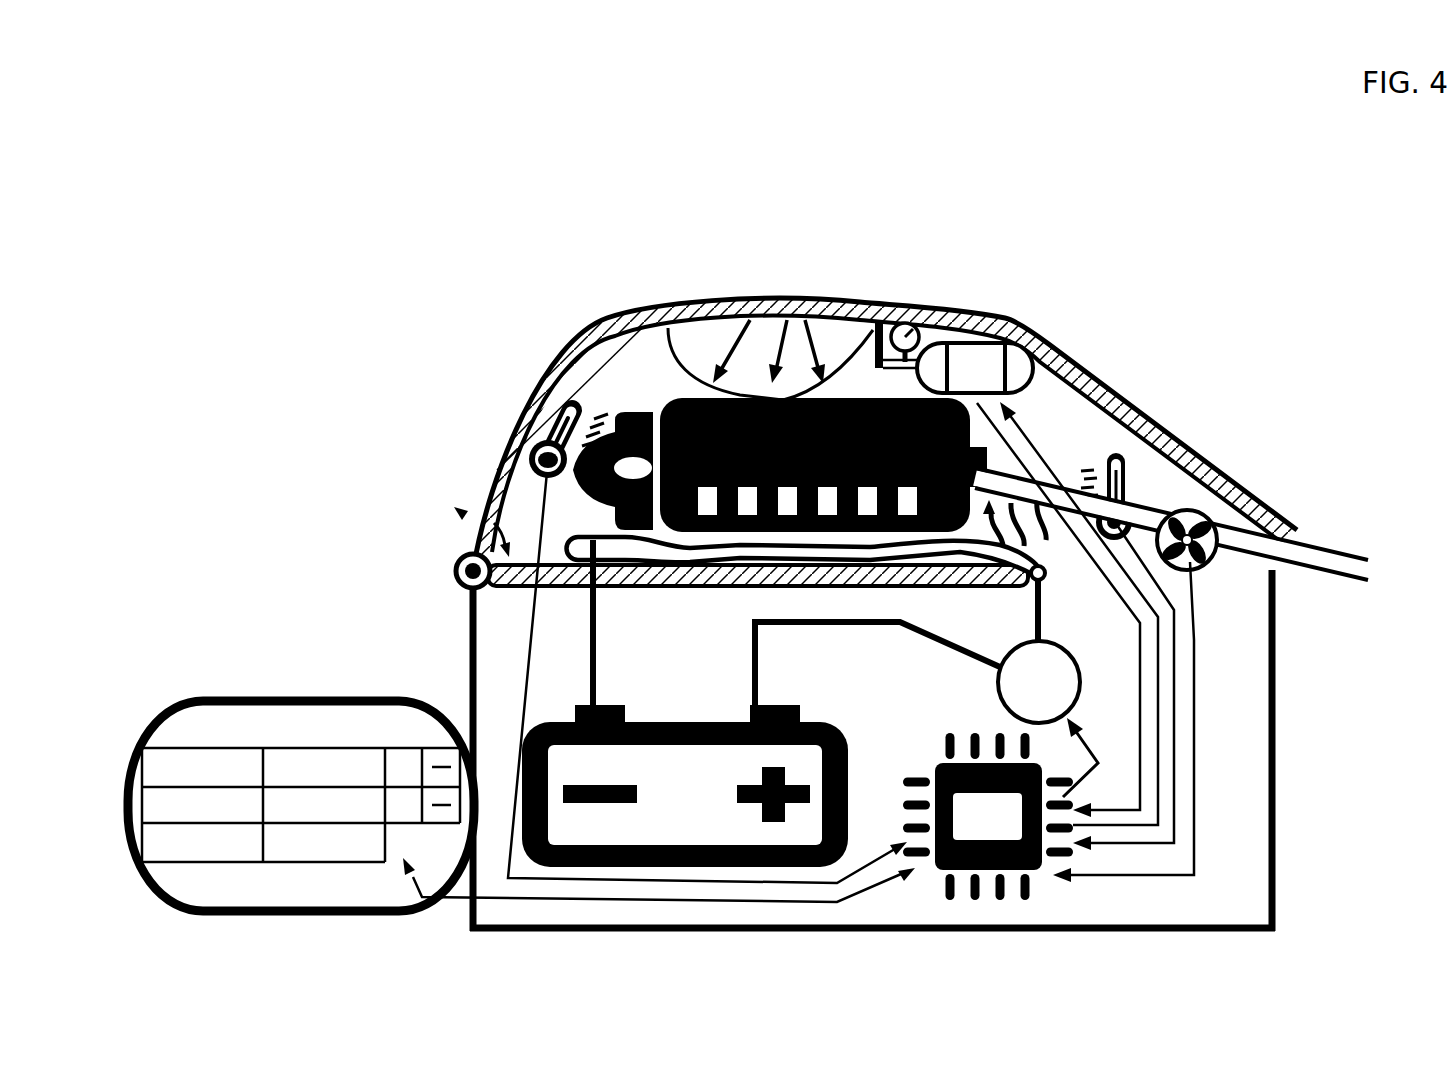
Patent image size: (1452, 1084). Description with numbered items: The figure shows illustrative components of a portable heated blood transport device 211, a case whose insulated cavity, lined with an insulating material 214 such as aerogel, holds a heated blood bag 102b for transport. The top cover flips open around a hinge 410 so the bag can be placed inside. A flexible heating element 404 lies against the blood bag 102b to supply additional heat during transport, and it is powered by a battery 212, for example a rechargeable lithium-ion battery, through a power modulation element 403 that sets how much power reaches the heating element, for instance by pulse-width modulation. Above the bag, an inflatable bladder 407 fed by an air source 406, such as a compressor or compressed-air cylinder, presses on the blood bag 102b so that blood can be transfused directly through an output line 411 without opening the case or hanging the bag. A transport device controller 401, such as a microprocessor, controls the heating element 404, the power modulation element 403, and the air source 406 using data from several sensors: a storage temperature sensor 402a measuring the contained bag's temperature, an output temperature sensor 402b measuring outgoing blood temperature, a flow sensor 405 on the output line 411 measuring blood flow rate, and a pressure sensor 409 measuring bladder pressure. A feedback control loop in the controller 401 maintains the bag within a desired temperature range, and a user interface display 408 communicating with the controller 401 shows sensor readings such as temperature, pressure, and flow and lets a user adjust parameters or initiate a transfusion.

The heated blood bag 102b is at (677, 403).
The insulating material 214 is at (577, 358).
The portable heated blood transport device 211 is at (500, 468).
The hinge 410 is at (462, 557).
The storage temperature sensor 402a is at (573, 400).
The output temperature sensor 402b is at (1118, 458).
The inflatable bladder 407 is at (835, 342).
The pressure sensor 409 is at (900, 320).
The air source 406 is at (958, 345).
The heating element 404 is at (1044, 563).
The output line 411 is at (1335, 562).
The flow sensor 405 is at (1203, 566).
The power modulation element 403 is at (998, 700).
The battery 212 is at (710, 720).
The transport device controller 401 is at (949, 766).
The user interface display 408 is at (218, 695).